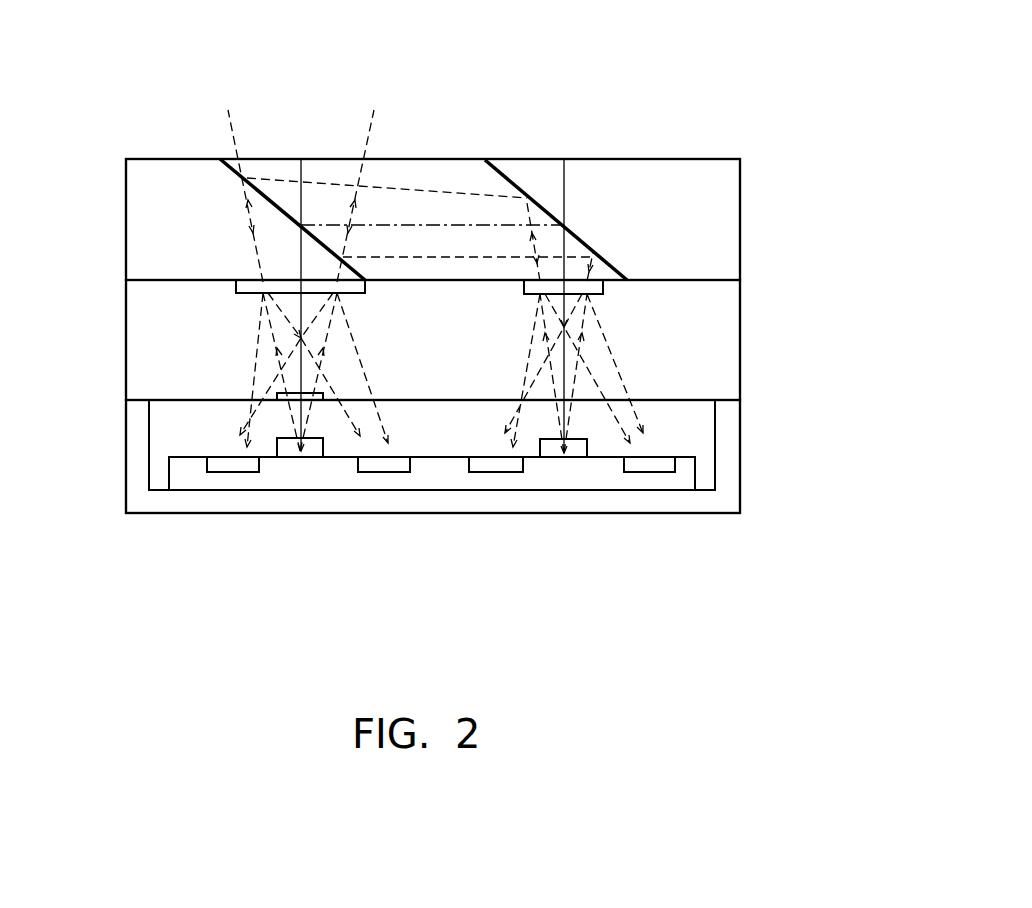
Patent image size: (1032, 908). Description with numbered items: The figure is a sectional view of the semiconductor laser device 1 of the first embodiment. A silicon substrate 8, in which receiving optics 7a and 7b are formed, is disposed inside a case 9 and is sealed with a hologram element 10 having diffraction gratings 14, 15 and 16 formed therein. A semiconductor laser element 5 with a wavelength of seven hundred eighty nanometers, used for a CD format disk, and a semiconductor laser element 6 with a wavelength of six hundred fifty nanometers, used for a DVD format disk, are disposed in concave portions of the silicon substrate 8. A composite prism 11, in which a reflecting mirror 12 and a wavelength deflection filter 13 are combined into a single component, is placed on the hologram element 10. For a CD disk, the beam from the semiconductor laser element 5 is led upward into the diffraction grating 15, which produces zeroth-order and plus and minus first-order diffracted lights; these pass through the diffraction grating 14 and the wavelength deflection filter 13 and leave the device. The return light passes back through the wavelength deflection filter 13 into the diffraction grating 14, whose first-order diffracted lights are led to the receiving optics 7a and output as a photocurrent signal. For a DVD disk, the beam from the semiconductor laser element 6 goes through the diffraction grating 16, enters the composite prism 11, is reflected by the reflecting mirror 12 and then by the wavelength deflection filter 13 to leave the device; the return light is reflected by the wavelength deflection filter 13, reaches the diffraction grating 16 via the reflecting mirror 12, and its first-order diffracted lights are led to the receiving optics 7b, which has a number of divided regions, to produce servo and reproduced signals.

The semiconductor laser device 1 is at (673, 133).
The semiconductor laser element 5 is at (293, 450).
The semiconductor laser element 6 is at (558, 452).
The receiving optics 7a is at (237, 463).
The receiving optics 7b is at (483, 465).
The silicon substrate 8 is at (688, 482).
The case 9 is at (733, 440).
The hologram element 10 is at (733, 336).
The composite prism 11 is at (733, 188).
The reflecting mirror 12 is at (521, 187).
The wavelength deflection filter 13 is at (261, 190).
The diffraction grating 14 is at (243, 280).
The diffraction grating 15 is at (265, 388).
The diffraction grating 16 is at (620, 275).